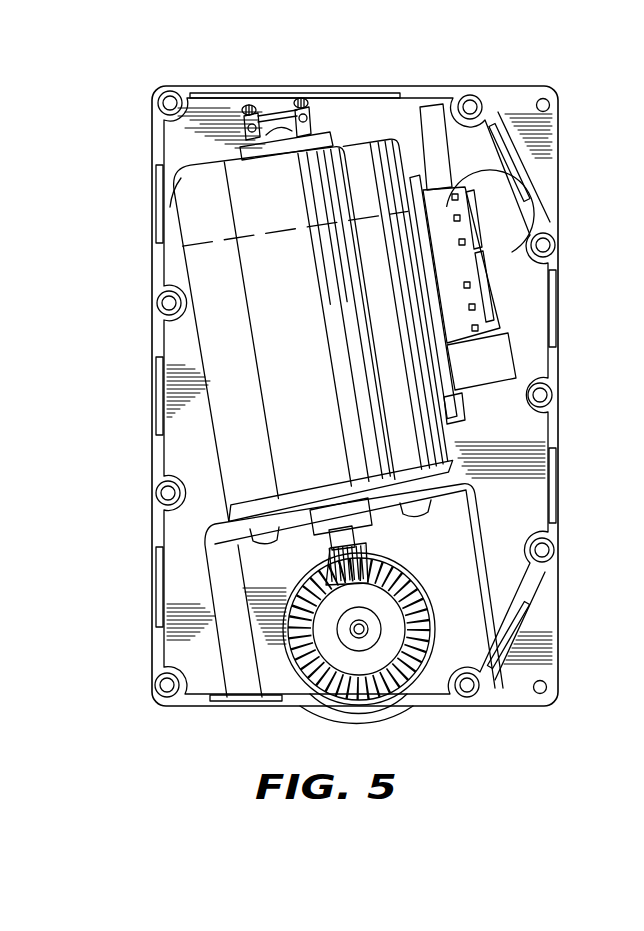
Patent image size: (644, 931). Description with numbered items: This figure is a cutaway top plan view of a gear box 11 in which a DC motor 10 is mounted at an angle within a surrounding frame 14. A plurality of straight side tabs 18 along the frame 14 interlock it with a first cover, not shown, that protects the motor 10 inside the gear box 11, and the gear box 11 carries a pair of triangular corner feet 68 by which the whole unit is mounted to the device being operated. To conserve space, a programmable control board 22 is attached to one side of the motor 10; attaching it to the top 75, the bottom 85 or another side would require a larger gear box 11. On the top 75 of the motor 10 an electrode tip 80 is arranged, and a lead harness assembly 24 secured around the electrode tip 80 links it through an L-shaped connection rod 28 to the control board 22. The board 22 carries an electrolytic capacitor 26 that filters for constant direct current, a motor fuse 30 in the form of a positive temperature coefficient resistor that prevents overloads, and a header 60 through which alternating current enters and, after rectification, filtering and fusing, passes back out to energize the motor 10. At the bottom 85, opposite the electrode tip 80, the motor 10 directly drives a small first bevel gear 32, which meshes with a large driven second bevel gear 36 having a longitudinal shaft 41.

The DC motor 10 is at (303, 348).
The gear box 11 is at (122, 355).
The frame 14 is at (240, 86).
The straight side tabs 18 is at (365, 92).
The programmable control board 22 is at (464, 413).
The lead harness assembly 24 is at (240, 122).
The electrolytic capacitor 26 is at (508, 357).
The L-shaped connection rod 28 is at (420, 104).
The motor fuse 30 is at (530, 222).
The first bevel gear 32 is at (327, 563).
The second bevel gear 36 is at (373, 703).
The longitudinal shaft 41 is at (374, 610).
The header 60 is at (476, 278).
The triangular corner feet 68 is at (557, 140).
The top 75 is at (226, 518).
The electrode tip 80 is at (283, 127).
The bottom 85 is at (172, 165).